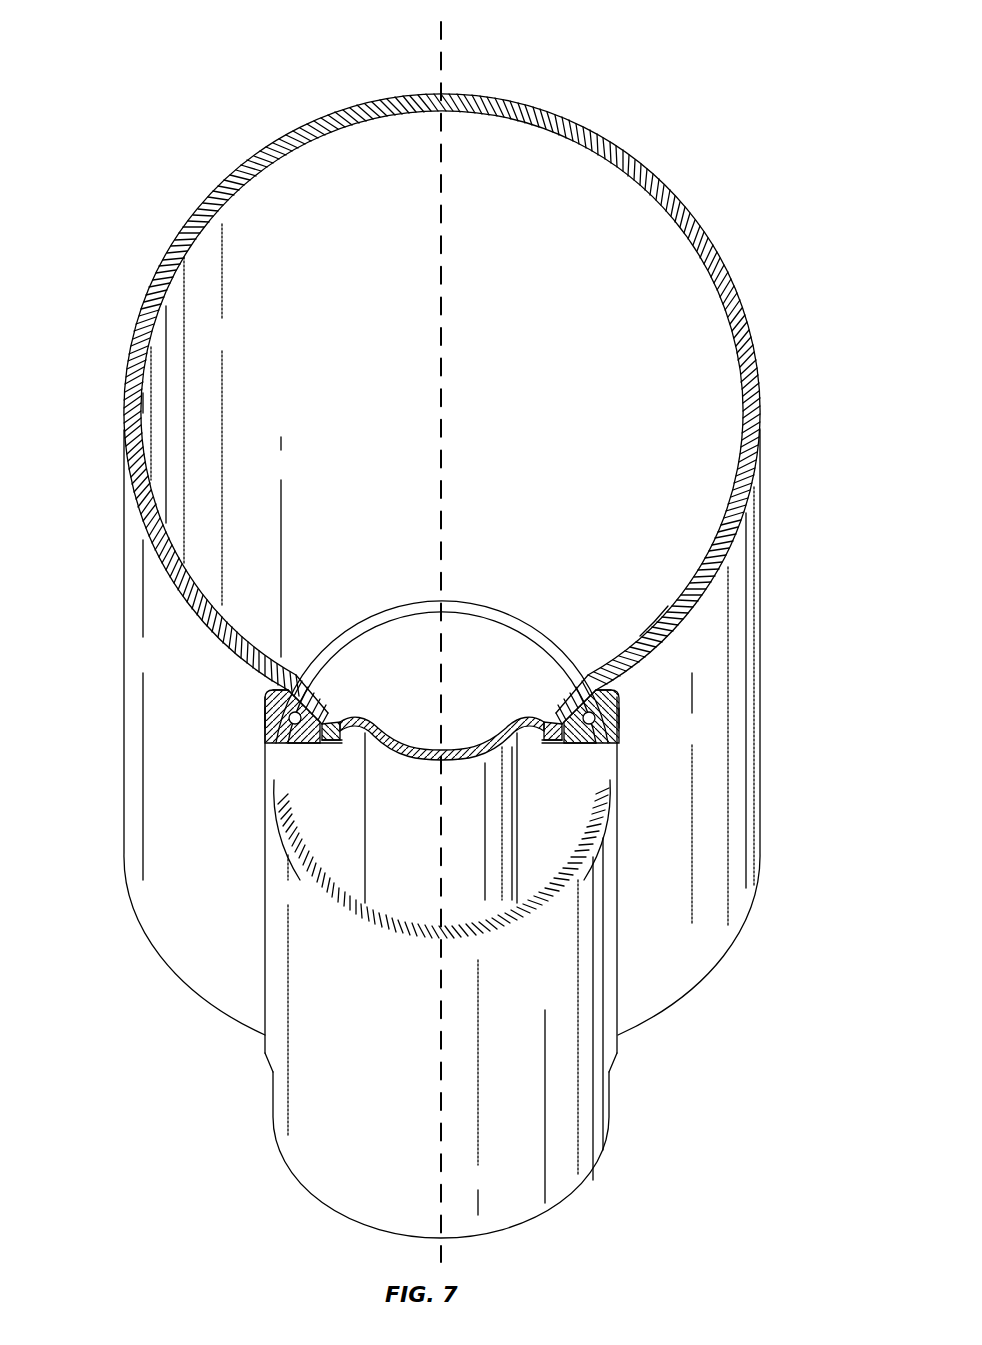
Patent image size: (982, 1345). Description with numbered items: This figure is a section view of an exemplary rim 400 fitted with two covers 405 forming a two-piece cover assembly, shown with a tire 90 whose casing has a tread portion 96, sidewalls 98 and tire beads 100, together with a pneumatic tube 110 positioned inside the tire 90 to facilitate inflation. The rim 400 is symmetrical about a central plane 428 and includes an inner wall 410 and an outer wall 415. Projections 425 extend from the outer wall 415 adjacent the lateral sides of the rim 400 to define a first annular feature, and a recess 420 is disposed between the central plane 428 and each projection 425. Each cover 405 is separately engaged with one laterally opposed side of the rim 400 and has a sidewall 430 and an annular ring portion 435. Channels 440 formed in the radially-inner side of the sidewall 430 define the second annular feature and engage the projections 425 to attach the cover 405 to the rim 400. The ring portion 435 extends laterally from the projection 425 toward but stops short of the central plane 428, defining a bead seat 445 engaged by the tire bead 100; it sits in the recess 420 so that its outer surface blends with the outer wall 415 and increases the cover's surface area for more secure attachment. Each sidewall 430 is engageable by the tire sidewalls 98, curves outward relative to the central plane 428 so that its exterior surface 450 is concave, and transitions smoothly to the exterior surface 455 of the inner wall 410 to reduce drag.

The central plane 428 is at (443, 20).
The sidewalls 98 is at (133, 712).
The tire 90 is at (683, 204).
The tread portion 96 is at (582, 128).
The pneumatic tube 110 is at (655, 627).
The rim 400 is at (598, 1157).
The exterior surface 450 is at (267, 817).
The inner wall 410 is at (375, 917).
The exterior surface 455 is at (282, 887).
The cover 405 is at (267, 698).
The channels 440 is at (296, 724).
The outer wall 415 is at (410, 757).
The bead seat 445 is at (323, 728).
The recess 420 is at (347, 727).
The projections 425 is at (273, 717).
The sidewall 430 is at (278, 695).
The annular ring portion 435 is at (323, 738).
The tire beads 100 is at (335, 720).